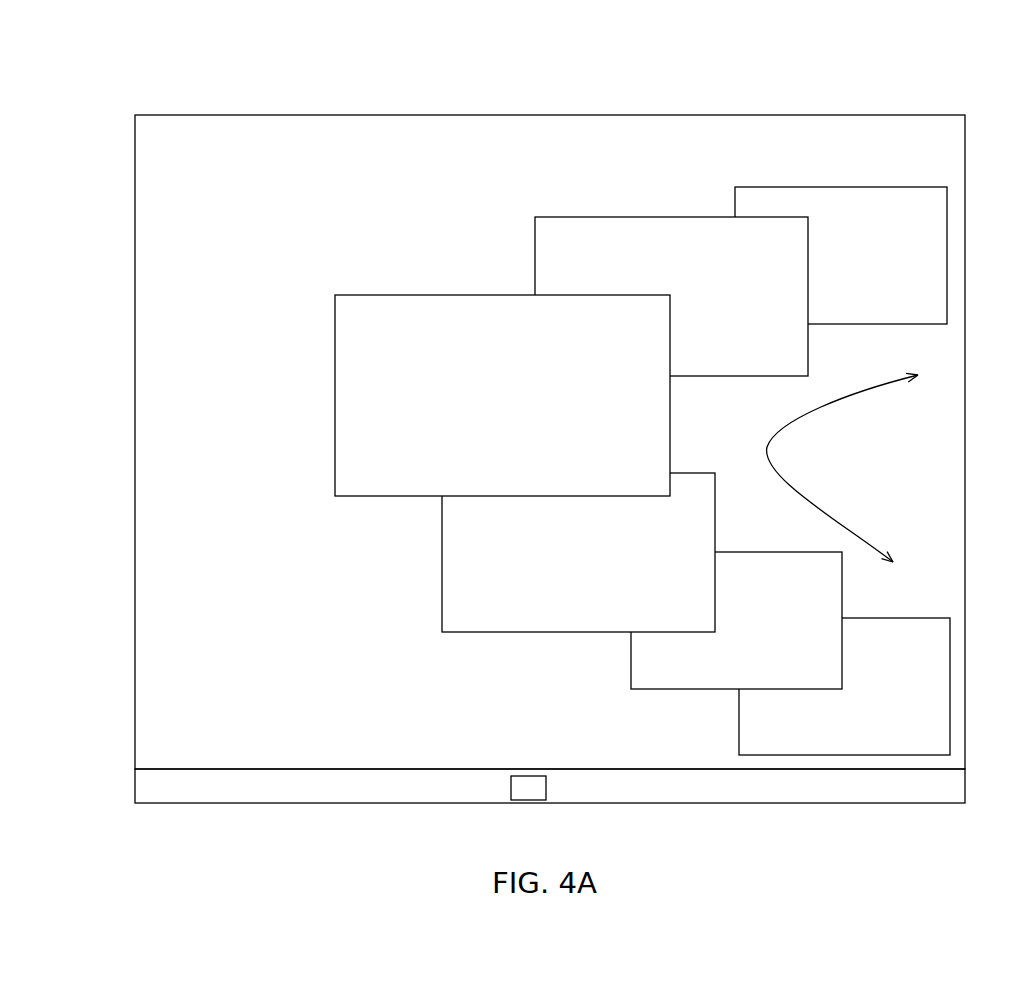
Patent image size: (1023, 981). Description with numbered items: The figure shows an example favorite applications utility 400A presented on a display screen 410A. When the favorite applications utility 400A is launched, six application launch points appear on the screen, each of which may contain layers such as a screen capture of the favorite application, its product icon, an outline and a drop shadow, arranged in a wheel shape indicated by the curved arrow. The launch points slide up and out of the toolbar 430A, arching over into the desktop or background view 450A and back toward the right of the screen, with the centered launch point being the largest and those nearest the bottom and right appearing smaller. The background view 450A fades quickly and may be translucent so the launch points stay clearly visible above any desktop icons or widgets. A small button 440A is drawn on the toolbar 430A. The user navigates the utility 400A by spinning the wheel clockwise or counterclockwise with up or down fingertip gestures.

The favorite applications utility 400A is at (412, 236).
The display screen 410A is at (492, 458).
The toolbar 430A is at (116, 770).
The taskbar button 440A is at (501, 816).
The background view 450A is at (550, 442).